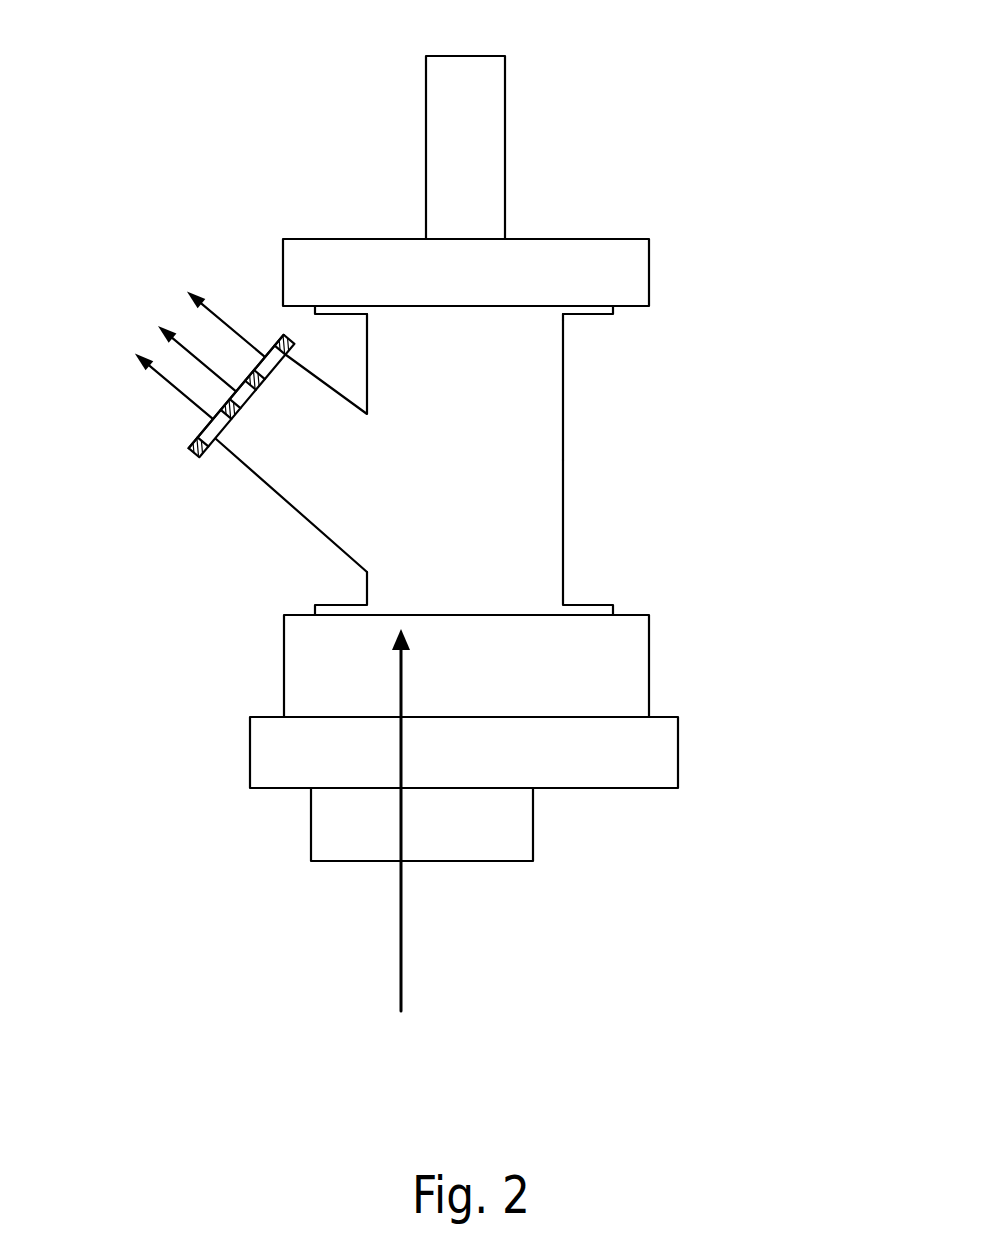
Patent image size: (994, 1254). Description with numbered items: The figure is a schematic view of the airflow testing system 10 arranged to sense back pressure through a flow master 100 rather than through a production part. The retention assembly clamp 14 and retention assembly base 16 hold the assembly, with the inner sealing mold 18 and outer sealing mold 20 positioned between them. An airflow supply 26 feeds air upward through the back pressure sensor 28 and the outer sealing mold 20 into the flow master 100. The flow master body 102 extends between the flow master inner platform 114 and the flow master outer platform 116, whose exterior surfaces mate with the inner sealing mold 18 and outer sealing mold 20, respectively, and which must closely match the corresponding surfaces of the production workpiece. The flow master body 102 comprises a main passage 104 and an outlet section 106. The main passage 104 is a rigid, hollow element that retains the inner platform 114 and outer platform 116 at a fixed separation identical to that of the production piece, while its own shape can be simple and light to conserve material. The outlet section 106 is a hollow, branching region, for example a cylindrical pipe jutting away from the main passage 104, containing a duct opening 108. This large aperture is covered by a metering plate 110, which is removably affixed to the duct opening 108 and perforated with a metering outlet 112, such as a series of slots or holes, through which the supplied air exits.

The testing system 10 is at (696, 88).
The retention assembly clamp 14 is at (506, 98).
The inner sealing mold 18 is at (650, 268).
The retention assembly base 16 is at (678, 744).
The outer sealing mold 20 is at (622, 660).
The back pressure sensor 28 is at (517, 813).
The airflow supply 26 is at (410, 956).
The flow master 100 is at (512, 464).
The flow master body 102 is at (580, 389).
The main passage 104 is at (565, 532).
The outlet section 106 is at (273, 500).
The duct opening 108 is at (221, 452).
The metering plate 110 is at (197, 440).
The metering outlet 112 is at (263, 354).
The flow master inner platform 114 is at (600, 318).
The flow master outer platform 116 is at (583, 603).